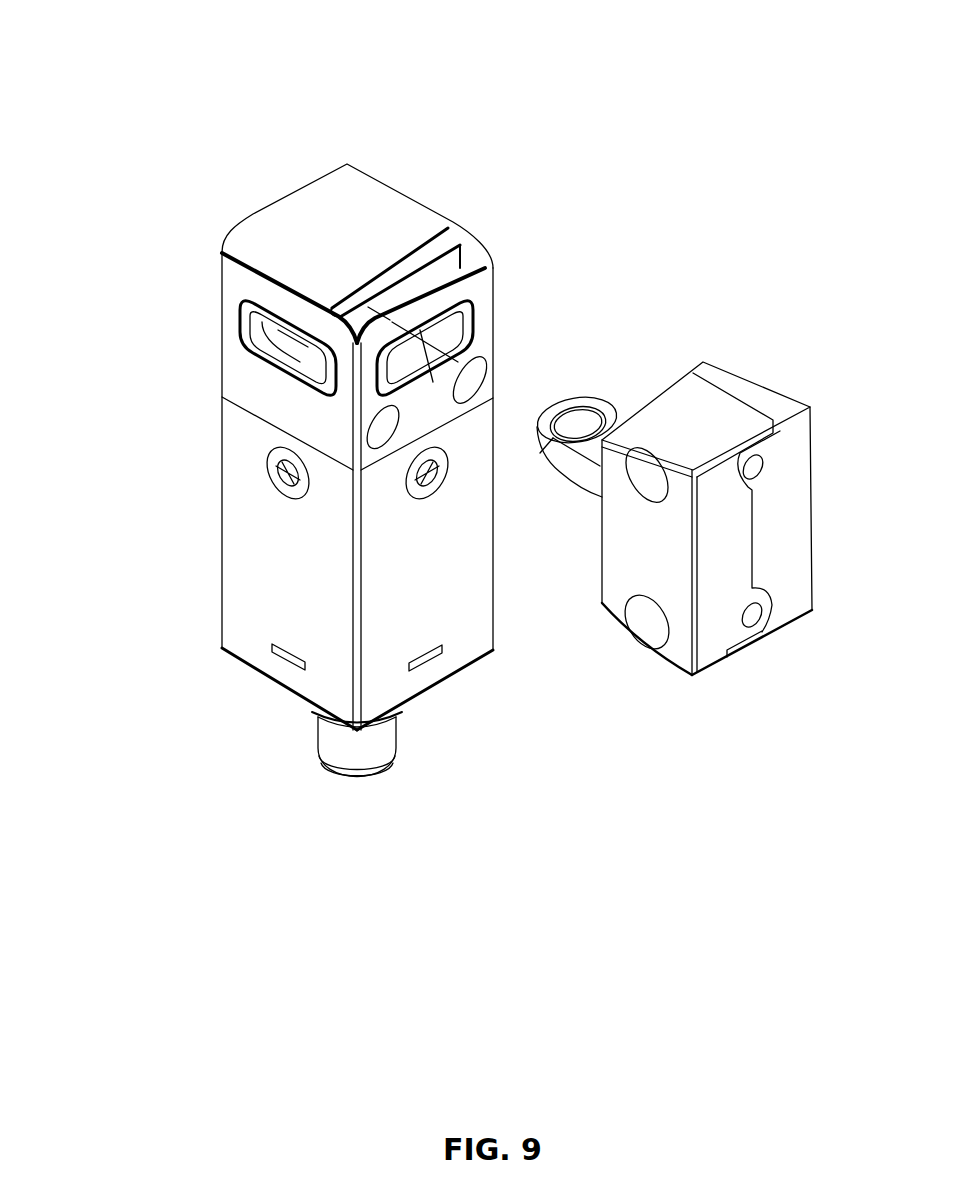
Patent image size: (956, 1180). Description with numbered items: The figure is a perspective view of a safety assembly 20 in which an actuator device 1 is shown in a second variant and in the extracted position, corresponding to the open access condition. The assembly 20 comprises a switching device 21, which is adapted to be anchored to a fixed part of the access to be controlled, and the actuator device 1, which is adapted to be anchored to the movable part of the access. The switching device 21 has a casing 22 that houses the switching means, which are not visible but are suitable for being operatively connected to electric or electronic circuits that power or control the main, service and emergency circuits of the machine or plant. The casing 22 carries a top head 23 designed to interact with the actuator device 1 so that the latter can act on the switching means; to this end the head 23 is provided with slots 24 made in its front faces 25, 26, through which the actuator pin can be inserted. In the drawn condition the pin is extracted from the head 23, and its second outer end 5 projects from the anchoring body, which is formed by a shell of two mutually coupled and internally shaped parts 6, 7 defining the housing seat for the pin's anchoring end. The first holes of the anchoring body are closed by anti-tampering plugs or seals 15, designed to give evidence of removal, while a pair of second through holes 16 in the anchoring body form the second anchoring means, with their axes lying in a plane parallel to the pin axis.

The actuator device 1 is at (856, 378).
The second outer end 5 is at (557, 463).
The shell part 6 is at (755, 388).
The shell part 7 is at (705, 648).
The anti-tampering plug or seal 15 is at (628, 492).
The second through holes 16 is at (760, 468).
The safety assembly 20 is at (755, 112).
The switching device 21 is at (190, 222).
The casing 22 is at (258, 583).
The top head 23 is at (337, 202).
The slots 24 is at (288, 351).
The front face 25 is at (236, 298).
The front face 26 is at (485, 257).